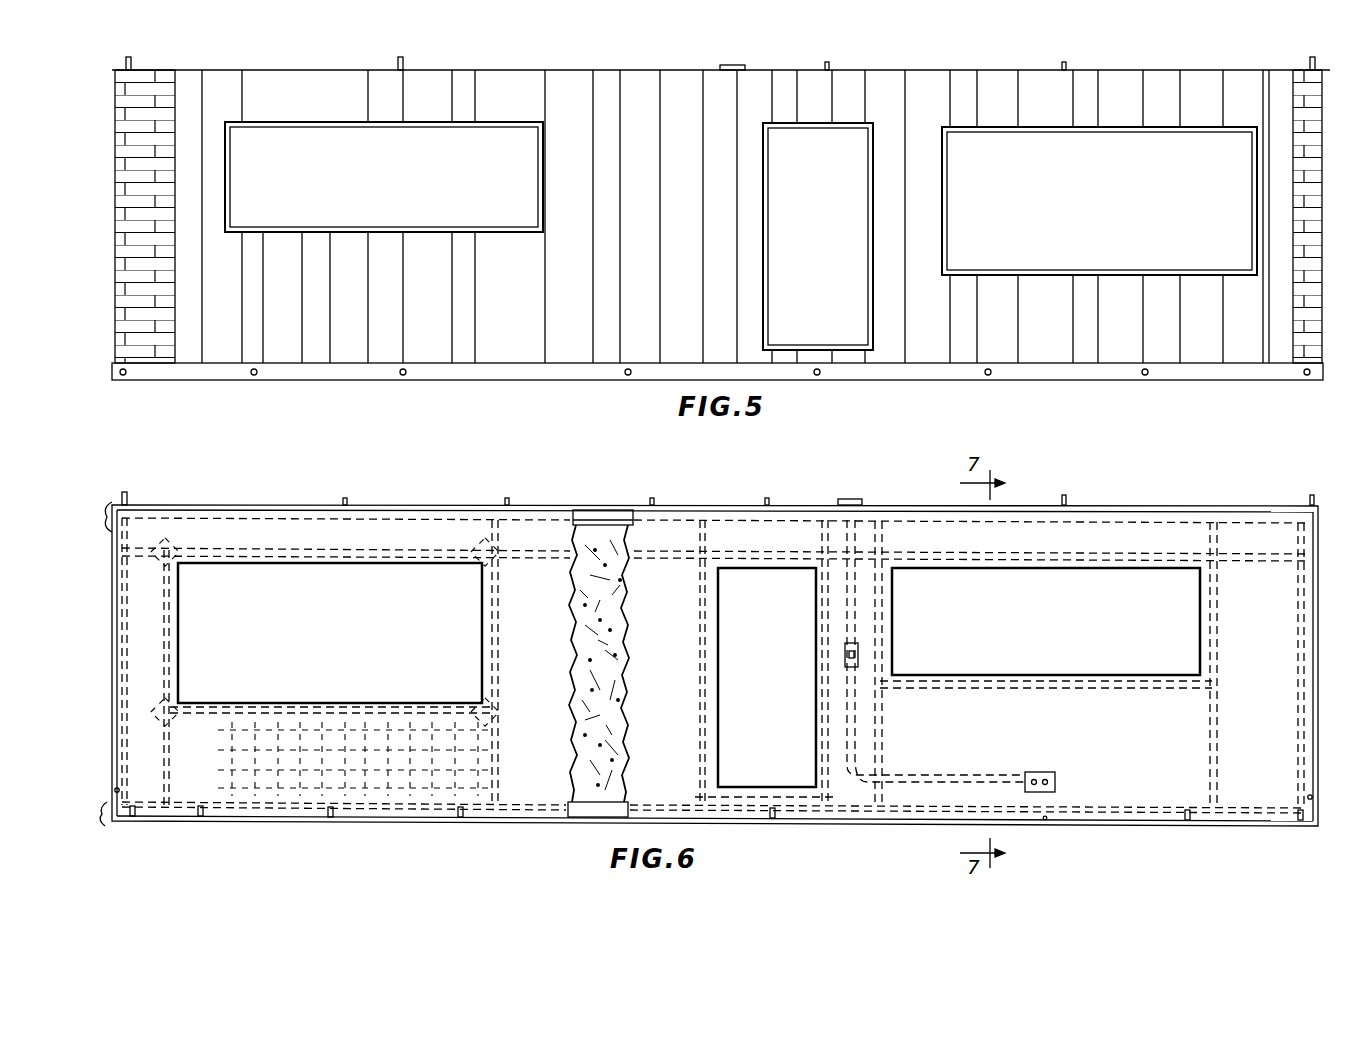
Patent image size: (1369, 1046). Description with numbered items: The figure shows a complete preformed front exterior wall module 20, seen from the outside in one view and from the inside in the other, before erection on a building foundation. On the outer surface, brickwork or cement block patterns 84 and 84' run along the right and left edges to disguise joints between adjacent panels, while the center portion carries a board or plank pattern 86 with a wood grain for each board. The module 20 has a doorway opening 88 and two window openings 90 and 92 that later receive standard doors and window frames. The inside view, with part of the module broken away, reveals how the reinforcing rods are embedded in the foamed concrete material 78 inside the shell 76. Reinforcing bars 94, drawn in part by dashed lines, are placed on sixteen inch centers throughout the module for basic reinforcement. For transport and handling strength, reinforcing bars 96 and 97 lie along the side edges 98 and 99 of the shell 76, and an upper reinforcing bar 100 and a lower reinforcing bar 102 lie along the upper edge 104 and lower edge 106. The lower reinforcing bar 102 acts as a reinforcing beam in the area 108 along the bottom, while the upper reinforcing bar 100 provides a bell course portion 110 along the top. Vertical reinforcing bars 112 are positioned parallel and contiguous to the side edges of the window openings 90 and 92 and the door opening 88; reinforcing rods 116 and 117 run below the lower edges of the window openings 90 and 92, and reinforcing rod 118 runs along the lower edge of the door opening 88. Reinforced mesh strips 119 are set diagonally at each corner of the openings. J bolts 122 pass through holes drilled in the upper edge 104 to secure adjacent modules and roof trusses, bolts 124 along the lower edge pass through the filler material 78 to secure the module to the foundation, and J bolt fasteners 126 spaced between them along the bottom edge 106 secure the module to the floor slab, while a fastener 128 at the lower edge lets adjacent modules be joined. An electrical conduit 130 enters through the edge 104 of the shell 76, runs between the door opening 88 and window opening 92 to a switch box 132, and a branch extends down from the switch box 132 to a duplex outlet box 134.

In FIG. 5, the wall module 20 is at (878, 377).
In FIG. 6, the wall module 20 is at (472, 502).
In FIG. 6, the shell 76 is at (600, 555).
In FIG. 6, the foamed concrete material 78 is at (610, 737).
In FIG. 5, the brickwork or cement block pattern 84 is at (1327, 216).
In FIG. 5, the brickwork or cement block pattern 84' is at (122, 216).
In FIG. 5, the board or plank pattern 86 is at (328, 336).
In FIG. 5, the doorway opening 88 is at (831, 196).
In FIG. 6, the doorway opening 88 is at (773, 638).
In FIG. 5, the window opening 90 is at (1100, 199).
In FIG. 6, the window opening 90 is at (333, 632).
In FIG. 5, the window opening 92 is at (397, 194).
In FIG. 6, the window opening 92 is at (1043, 640).
In FIG. 6, the reinforcing bars 94 is at (374, 759).
In FIG. 6, the reinforcing bar 96 is at (128, 647).
In FIG. 6, the reinforcing bar 97 is at (1300, 644).
In FIG. 6, the side edge 98 is at (113, 626).
In FIG. 6, the side edge 99 is at (1317, 652).
In FIG. 6, the upper reinforcing bar 100 is at (303, 516).
In FIG. 6, the lower reinforcing bar 102 is at (590, 810).
In FIG. 5, the upper edge 104 is at (668, 63).
In FIG. 6, the upper edge 104 is at (698, 506).
In FIG. 5, the lower edge 106 is at (654, 380).
In FIG. 6, the lower edge 106 is at (835, 827).
In FIG. 6, the lower edge area 108 is at (98, 822).
In FIG. 6, the bell course portion 110 is at (105, 514).
In FIG. 6, the reinforcing bars 112 is at (884, 541).
In FIG. 6, the reinforcing rod 116 is at (382, 706).
In FIG. 6, the reinforcing rod 117 is at (995, 691).
In FIG. 6, the reinforcing rod 118 is at (748, 798).
In FIG. 6, the reinforced mesh strips 119 is at (178, 545).
In FIG. 5, the J bolts 122 is at (132, 62).
In FIG. 6, the J bolts 122 is at (129, 499).
In FIG. 5, the bolts 124 is at (126, 376).
In FIG. 6, the J bolt fasteners 126 is at (137, 821).
In FIG. 6, the fastener 128 is at (115, 788).
In FIG. 6, the electrical conduit 130 is at (924, 776).
In FIG. 6, the switch box 132 is at (860, 654).
In FIG. 6, the duplex outlet box 134 is at (1040, 772).